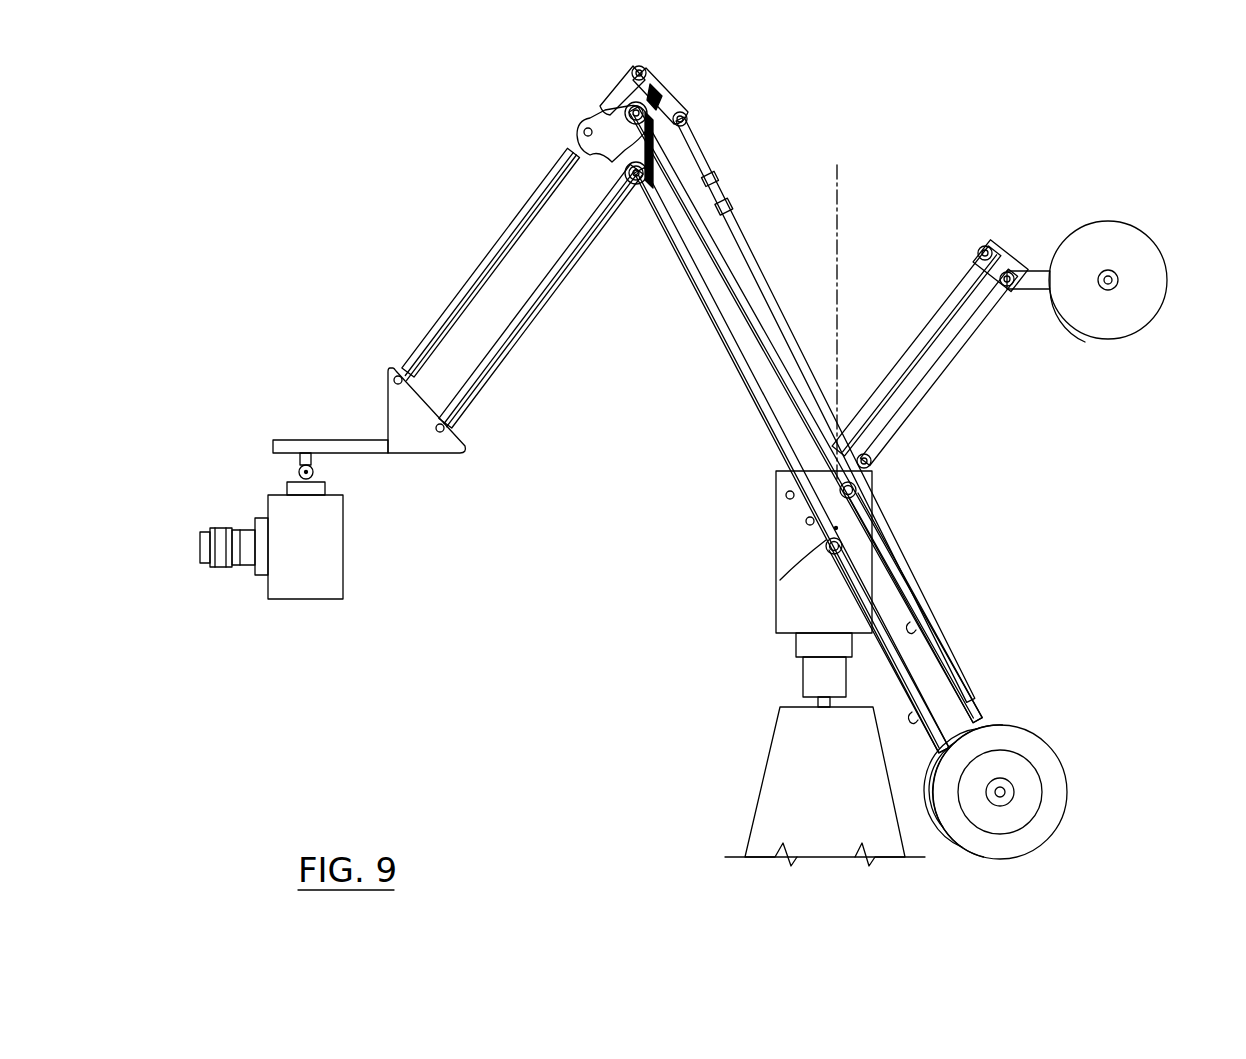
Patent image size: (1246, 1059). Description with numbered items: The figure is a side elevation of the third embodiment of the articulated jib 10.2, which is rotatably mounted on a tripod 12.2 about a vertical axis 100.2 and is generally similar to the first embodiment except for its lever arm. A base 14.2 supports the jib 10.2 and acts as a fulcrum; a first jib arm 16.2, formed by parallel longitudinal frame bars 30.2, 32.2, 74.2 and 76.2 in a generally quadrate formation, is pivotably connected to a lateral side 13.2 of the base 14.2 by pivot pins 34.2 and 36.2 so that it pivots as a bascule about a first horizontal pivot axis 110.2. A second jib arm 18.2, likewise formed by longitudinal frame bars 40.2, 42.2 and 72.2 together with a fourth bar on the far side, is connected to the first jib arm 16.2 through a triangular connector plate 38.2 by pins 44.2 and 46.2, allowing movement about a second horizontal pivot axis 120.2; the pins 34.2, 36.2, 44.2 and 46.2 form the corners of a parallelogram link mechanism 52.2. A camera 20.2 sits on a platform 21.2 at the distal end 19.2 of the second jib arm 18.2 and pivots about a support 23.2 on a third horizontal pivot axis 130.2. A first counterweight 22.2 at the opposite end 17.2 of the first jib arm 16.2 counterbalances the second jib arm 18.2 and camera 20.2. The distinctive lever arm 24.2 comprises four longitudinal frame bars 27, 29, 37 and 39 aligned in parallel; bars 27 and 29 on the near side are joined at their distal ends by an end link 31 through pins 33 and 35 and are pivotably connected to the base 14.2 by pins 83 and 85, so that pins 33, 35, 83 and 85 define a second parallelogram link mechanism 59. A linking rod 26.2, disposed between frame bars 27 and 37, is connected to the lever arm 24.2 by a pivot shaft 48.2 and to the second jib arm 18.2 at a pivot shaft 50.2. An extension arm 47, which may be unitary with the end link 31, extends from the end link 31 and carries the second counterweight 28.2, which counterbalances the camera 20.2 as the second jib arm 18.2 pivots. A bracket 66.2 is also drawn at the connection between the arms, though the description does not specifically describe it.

The articulated jib 10.2 is at (378, 97).
The tripod 12.2 is at (762, 815).
The lateral side 13.2 is at (800, 585).
The base 14.2 is at (790, 638).
The first jib arm 16.2 is at (750, 404).
The end 17.2 is at (983, 723).
The second jib arm 18.2 is at (523, 294).
The distal end 19.2 is at (468, 436).
The camera 20.2 is at (306, 590).
The platform 21.2 is at (306, 445).
The first counterweight 22.2 is at (1055, 792).
The support 23.2 is at (300, 470).
The lever arm 24.2 is at (946, 344).
The linking rod 26.2 is at (735, 213).
The longitudinal frame bar 27 is at (940, 370).
The second counterweight 28.2 is at (1160, 270).
The longitudinal frame bar 29 is at (938, 317).
The longitudinal frame bar 30.2 is at (915, 690).
The end link 31 is at (1001, 262).
The longitudinal frame bar 32.2 is at (905, 598).
The pin 33 is at (1014, 290).
The pivot pin 34.2 is at (844, 546).
The pin 35 is at (982, 246).
The pivot pin 36.2 is at (858, 490).
The longitudinal frame bar 37 is at (1016, 320).
The triangular connector plate 38.2 is at (604, 108).
The longitudinal frame bar 39 is at (955, 292).
The longitudinal frame bar 40.2 is at (505, 345).
The longitudinal frame bar 42.2 is at (495, 262).
The pin 44.2 is at (648, 128).
The pin 46.2 is at (632, 70).
The extension arm 47 is at (1035, 302).
The pivot shaft 48.2 is at (876, 385).
The pivot shaft 50.2 is at (682, 114).
The parallelogram link mechanism 52.2 is at (752, 352).
The parallelogram link mechanism 59 is at (892, 387).
The bracket 66.2 is at (583, 130).
The longitudinal frame bar 72.2 is at (490, 300).
The longitudinal frame bar 74.2 is at (914, 720).
The longitudinal frame bar 76.2 is at (912, 630).
The pin 83 is at (806, 524).
The pin 85 is at (786, 496).
The vertical axis 100.2 is at (838, 174).
The first horizontal pivot axis 110.2 is at (830, 542).
The second horizontal pivot axis 120.2 is at (624, 180).
The third horizontal pivot axis 130.2 is at (318, 470).